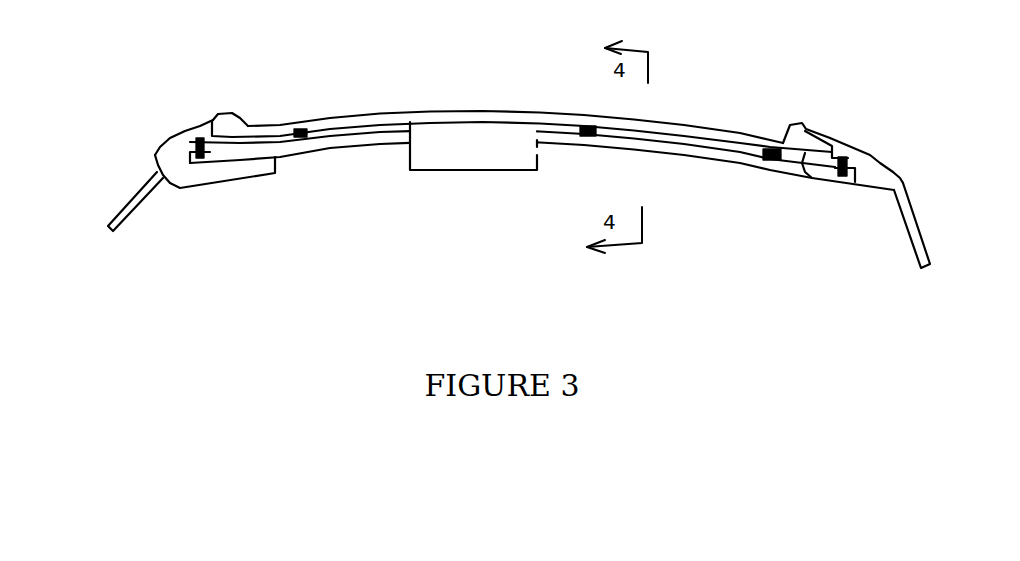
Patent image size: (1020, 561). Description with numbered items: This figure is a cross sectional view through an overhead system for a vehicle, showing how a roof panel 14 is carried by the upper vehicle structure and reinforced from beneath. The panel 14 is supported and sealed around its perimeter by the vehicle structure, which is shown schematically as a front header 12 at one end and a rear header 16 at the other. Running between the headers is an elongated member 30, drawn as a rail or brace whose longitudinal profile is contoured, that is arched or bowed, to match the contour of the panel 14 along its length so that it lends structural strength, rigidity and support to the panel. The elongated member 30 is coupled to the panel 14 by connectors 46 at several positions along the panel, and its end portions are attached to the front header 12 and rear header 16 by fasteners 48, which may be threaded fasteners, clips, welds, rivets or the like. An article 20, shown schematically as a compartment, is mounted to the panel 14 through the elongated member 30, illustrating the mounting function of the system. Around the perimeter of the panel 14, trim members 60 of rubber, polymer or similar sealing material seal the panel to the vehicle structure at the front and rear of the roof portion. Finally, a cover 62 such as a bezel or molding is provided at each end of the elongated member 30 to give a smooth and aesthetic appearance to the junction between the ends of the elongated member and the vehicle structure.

The front header 12 is at (160, 155).
The panel 14 is at (365, 113).
The rear header 16 is at (878, 165).
The article 20 is at (472, 153).
The elongated member 30 is at (333, 143).
The connector 46 is at (300, 130).
The fastener 48 is at (200, 140).
The trim member 60 is at (233, 113).
The cover 62 is at (208, 175).